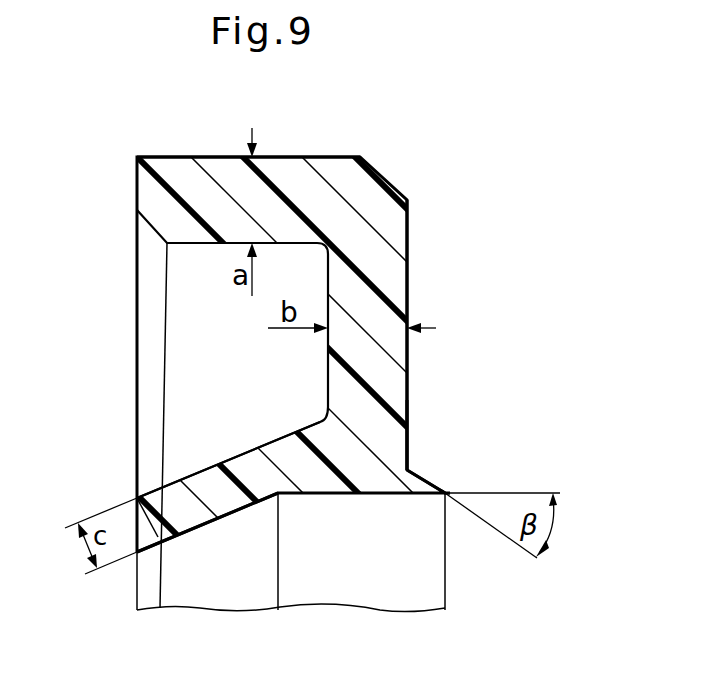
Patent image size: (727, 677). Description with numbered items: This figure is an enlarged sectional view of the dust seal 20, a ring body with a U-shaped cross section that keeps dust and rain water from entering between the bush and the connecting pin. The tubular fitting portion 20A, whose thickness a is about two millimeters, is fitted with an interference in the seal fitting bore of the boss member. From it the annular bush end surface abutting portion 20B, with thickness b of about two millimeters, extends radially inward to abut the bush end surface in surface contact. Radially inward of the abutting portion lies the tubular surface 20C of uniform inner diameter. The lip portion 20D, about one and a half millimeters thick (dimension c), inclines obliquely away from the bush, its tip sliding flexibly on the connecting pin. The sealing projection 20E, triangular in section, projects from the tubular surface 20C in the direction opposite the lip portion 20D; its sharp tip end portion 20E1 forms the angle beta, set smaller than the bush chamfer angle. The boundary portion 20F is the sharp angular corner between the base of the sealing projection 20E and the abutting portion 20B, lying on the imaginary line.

The dust seal 20 is at (386, 168).
The tubular fitting portion 20A is at (201, 167).
The bush end surface abutting portion 20B is at (383, 307).
The tubular surface 20C is at (320, 494).
The lip portion 20D is at (178, 498).
The sealing projection 20E is at (428, 486).
The tip end portion 20E1 is at (446, 494).
The boundary portion 20F is at (408, 463).